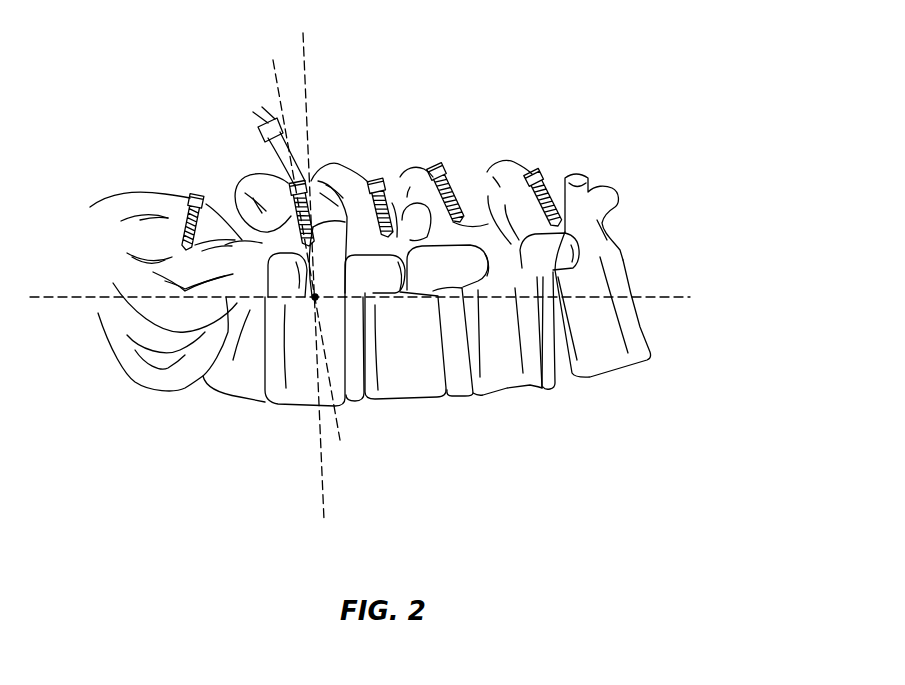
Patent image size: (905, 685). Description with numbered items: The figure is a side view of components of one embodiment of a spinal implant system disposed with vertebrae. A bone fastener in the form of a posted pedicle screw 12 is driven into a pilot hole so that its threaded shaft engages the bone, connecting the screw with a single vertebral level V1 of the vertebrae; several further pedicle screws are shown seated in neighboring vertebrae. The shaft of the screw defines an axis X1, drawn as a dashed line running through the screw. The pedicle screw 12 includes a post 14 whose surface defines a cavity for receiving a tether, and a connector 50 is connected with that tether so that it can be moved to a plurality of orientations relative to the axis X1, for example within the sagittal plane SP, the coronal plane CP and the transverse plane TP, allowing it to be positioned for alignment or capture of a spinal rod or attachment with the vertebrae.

The posted pedicle screw 12 is at (297, 220).
The post 14 is at (306, 182).
The connector 50 is at (263, 130).
The single vertebral level V1 is at (270, 385).
The coronal plane CP is at (314, 298).
The transverse plane TP is at (308, 264).
The sagittal plane SP is at (376, 298).
The axis X1 is at (313, 263).